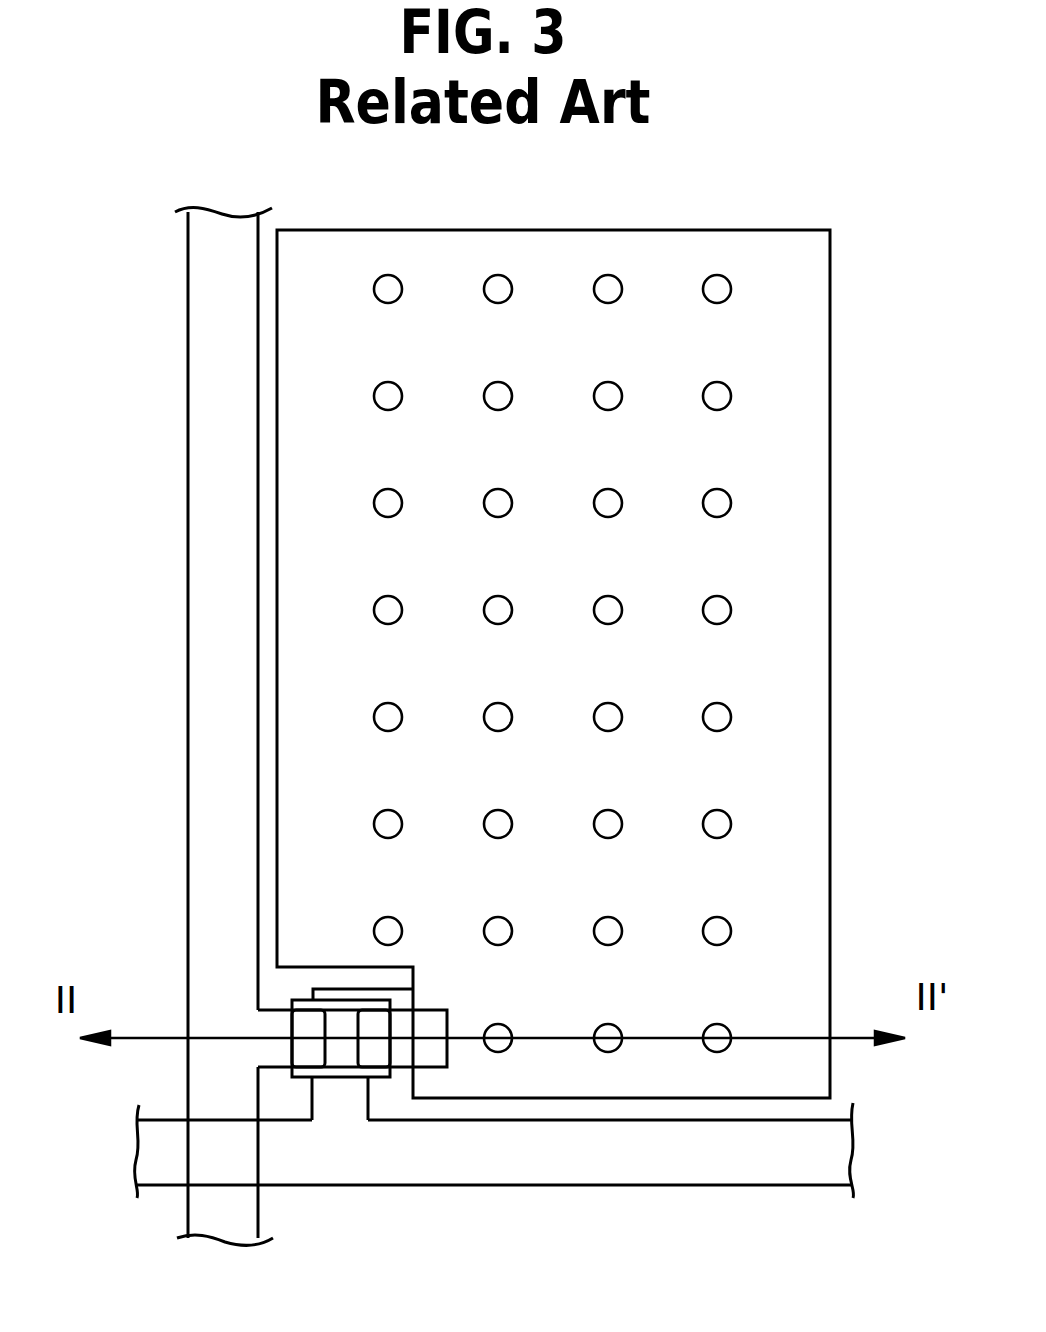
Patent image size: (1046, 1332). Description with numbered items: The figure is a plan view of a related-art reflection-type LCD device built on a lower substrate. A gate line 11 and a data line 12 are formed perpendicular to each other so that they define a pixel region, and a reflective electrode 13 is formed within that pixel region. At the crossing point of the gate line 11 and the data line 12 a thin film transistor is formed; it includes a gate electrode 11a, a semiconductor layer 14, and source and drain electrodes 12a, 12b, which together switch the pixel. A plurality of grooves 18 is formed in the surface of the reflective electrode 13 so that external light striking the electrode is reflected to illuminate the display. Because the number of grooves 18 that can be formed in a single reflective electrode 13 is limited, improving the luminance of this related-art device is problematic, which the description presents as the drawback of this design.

The gate line 11 is at (708, 1160).
The gate electrode 11a is at (342, 1100).
The data line 12 is at (212, 566).
The source electrode 12a is at (280, 1055).
The drain electrode 12b is at (375, 1053).
The reflective electrode 13 is at (815, 763).
The semiconductor layer 14 is at (347, 1008).
The grooves 18 is at (731, 500).